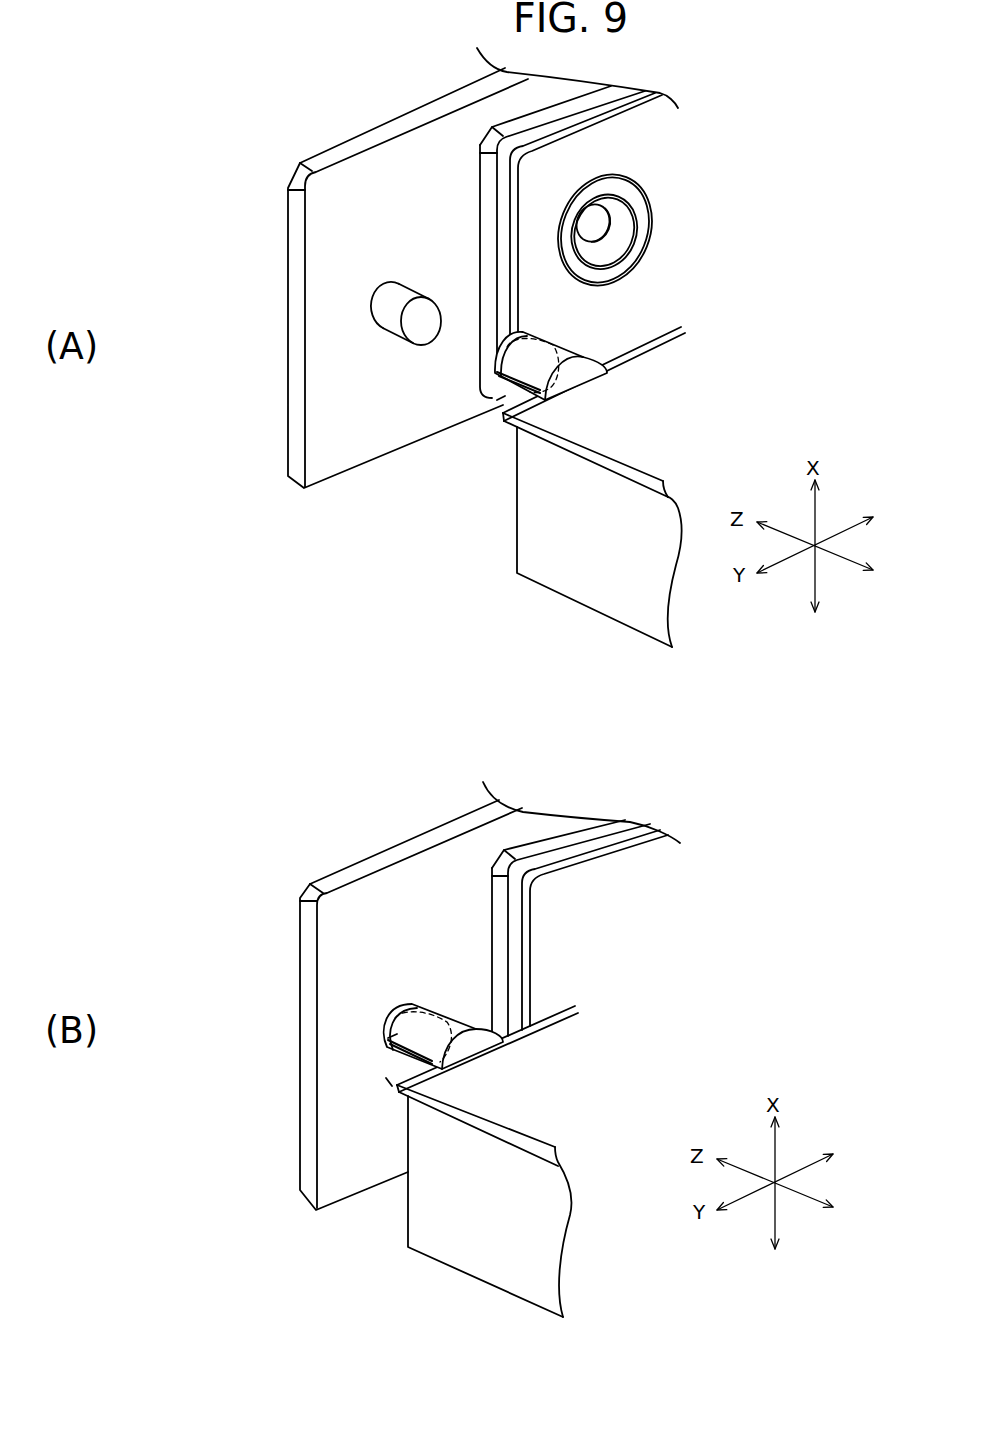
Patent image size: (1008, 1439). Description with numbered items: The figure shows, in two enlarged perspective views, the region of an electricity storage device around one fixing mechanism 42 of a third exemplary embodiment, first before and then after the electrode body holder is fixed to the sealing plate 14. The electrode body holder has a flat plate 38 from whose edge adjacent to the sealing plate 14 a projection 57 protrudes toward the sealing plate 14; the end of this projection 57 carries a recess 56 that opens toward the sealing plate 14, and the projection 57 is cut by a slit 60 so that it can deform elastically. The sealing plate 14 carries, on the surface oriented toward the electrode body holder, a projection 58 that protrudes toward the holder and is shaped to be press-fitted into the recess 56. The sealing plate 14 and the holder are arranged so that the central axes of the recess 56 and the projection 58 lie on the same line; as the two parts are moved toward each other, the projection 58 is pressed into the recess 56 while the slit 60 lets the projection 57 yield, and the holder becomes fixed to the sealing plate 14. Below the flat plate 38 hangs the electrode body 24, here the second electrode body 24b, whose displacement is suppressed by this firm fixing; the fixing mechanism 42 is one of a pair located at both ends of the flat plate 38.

The sealing plate 14 is at (288, 232).
The electrode body 24 is at (545, 886).
The second electrode body 24b is at (569, 598).
The flat plate 38 is at (627, 425).
The fixing mechanism 42 is at (387, 1080).
The recess 56 is at (548, 337).
The projection 57 is at (507, 397).
The projection 58 is at (390, 313).
The slit 60 is at (500, 360).